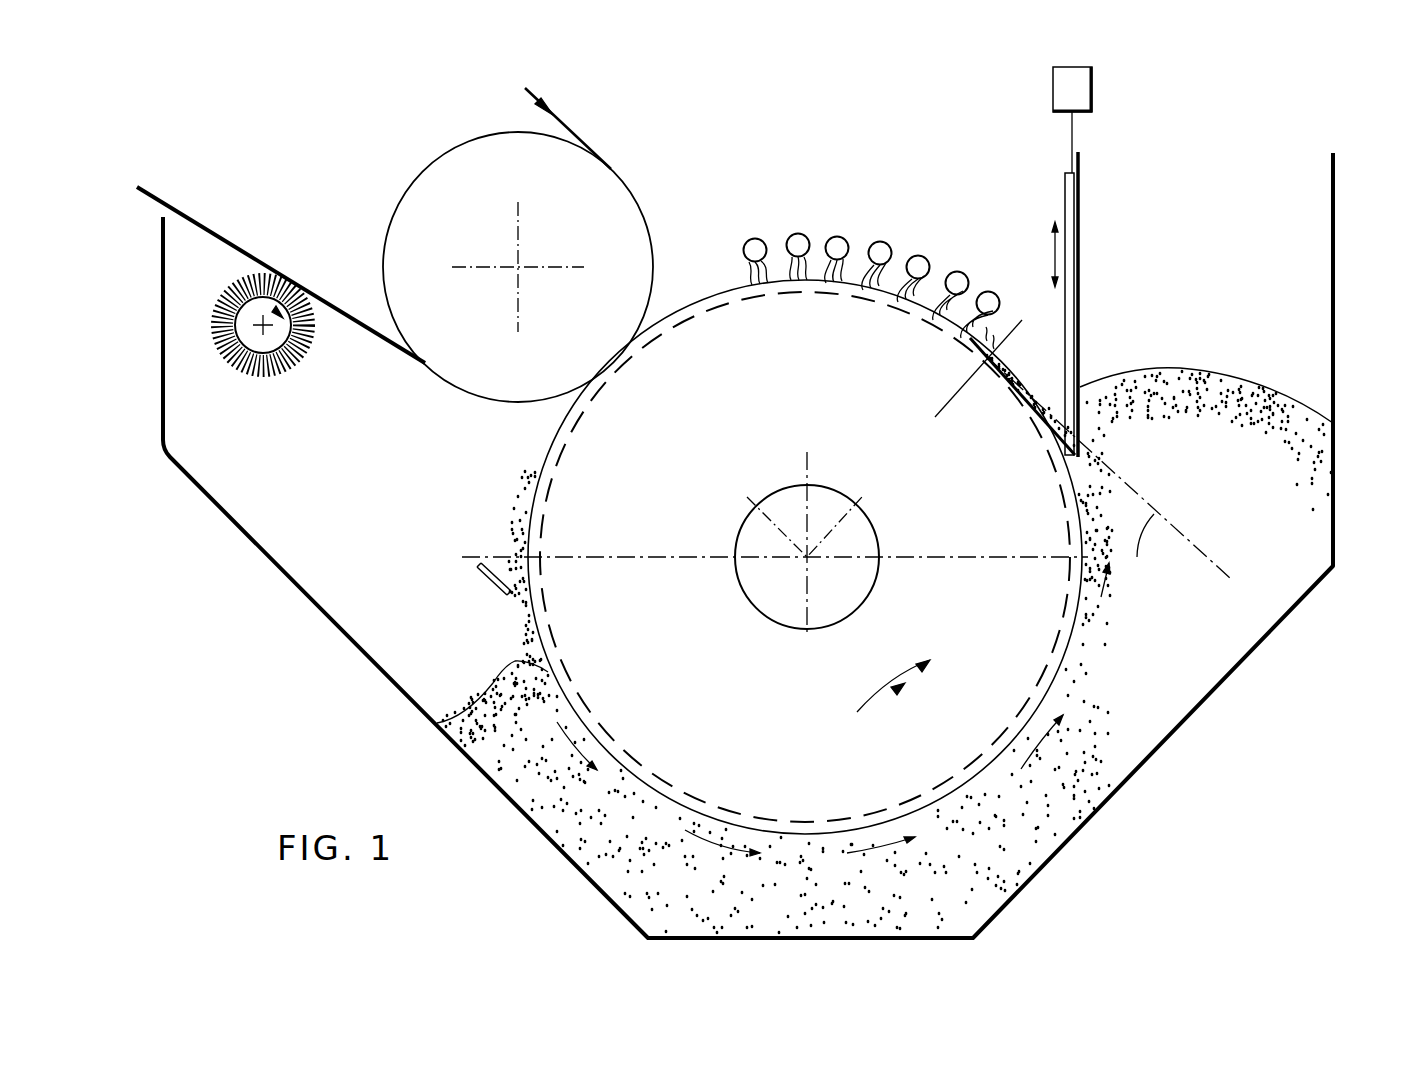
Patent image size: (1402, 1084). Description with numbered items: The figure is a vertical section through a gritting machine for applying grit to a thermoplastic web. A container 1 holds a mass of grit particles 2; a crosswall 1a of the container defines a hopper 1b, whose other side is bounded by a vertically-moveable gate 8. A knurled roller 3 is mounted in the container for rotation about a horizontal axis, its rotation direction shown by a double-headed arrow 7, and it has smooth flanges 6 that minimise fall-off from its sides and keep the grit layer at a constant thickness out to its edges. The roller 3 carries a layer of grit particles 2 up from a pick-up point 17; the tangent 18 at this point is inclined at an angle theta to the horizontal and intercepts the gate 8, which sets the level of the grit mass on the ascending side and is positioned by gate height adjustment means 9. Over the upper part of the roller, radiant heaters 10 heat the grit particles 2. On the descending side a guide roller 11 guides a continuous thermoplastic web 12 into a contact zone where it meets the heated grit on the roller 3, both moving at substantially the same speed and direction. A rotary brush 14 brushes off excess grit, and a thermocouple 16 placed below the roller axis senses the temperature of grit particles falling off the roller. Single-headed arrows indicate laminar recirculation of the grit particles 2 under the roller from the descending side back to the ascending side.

The container 1 is at (555, 847).
The crosswall 1a is at (1080, 224).
The hopper 1b is at (1216, 312).
The grit particles 2 is at (1290, 400).
The roller 3 is at (1042, 656).
The smooth flanges 6 is at (697, 289).
The double-headed arrow 7 is at (858, 710).
The gate 8 is at (1074, 278).
The gate height adjustment means 9 is at (1053, 90).
The radiant heaters 10 is at (880, 244).
The guide roller 11 is at (622, 215).
The thermoplastic web 12 is at (615, 132).
The rotary brush 14 is at (218, 327).
The thermocouple 16 is at (488, 577).
The pick-up point 17 is at (988, 355).
The tangent 18 is at (1139, 490).